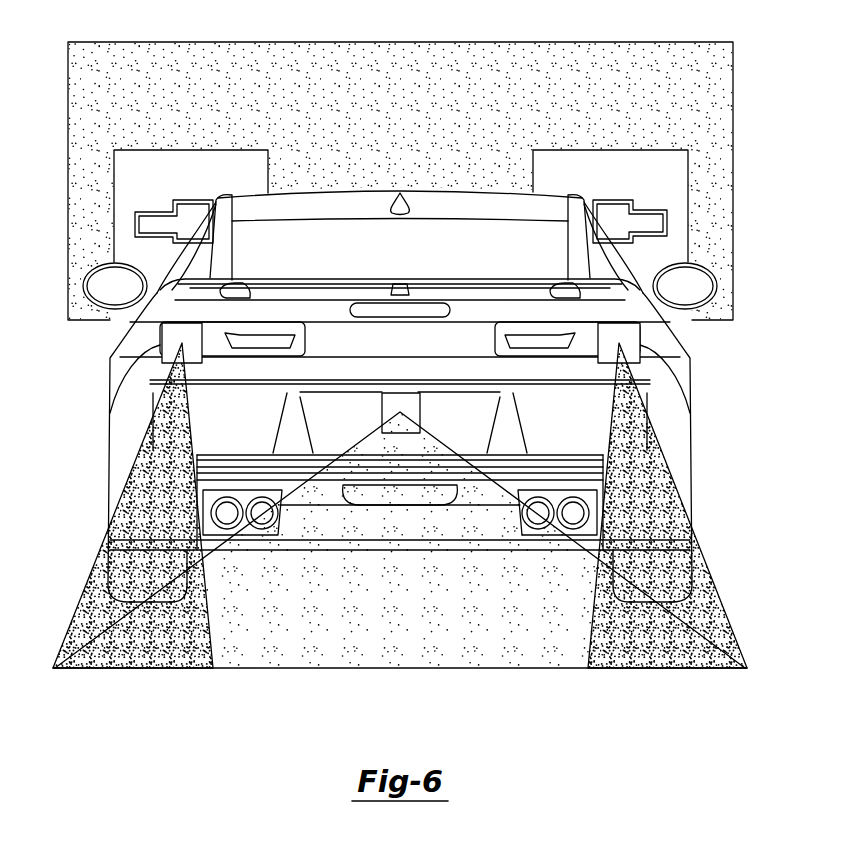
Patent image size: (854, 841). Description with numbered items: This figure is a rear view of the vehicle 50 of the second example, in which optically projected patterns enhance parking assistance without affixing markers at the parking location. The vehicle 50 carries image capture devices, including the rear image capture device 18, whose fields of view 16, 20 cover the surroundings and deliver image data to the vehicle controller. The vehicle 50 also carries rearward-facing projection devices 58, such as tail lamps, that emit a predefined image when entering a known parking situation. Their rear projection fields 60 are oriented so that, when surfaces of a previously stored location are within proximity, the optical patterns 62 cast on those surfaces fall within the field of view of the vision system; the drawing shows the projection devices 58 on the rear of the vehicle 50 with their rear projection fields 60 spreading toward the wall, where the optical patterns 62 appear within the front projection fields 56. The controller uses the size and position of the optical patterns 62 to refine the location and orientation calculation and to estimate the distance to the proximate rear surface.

The field of view 16 is at (198, 42).
The image capture device 18 is at (382, 412).
The field of view 20 is at (283, 672).
The vehicle 50 is at (462, 230).
The front projection field 56 is at (153, 150).
The rearward-facing projection device 58 is at (162, 344).
The rear projection field 60 is at (82, 597).
The optical pattern 62 is at (135, 226).